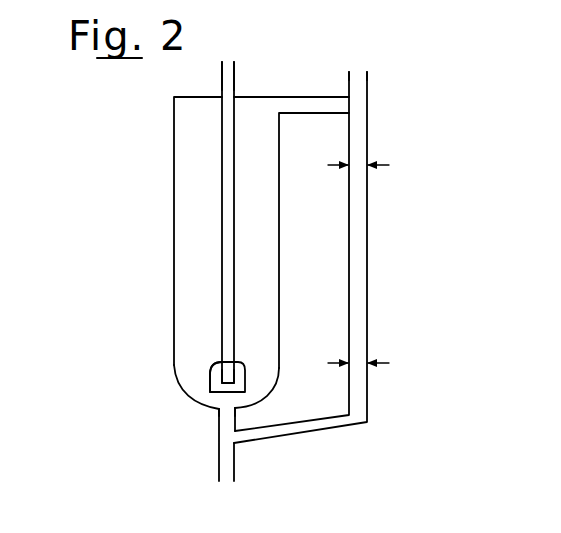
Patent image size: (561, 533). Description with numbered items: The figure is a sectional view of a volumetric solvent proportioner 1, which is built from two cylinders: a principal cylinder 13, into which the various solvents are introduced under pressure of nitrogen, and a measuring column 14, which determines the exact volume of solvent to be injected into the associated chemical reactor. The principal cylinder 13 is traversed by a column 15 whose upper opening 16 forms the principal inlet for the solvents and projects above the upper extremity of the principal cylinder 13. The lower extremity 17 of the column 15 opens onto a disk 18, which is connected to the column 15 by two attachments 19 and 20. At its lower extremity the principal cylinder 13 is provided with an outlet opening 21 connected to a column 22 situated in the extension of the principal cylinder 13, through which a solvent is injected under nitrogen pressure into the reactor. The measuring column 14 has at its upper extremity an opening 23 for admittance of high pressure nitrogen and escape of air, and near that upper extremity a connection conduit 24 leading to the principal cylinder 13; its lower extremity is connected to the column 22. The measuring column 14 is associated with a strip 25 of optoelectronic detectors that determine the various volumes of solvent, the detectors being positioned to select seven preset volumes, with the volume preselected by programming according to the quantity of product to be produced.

The volumetric solvent proportioner 1 is at (150, 187).
The principal cylinder 13 is at (190, 145).
The measuring column 14 is at (375, 128).
The column 15 is at (228, 238).
The upper opening 16 is at (229, 60).
The lower extremity 17 is at (228, 373).
The disk 18 is at (238, 393).
The attachment 19 is at (222, 366).
The attachment 20 is at (210, 371).
The outlet opening 21 is at (228, 412).
The column 22 is at (227, 460).
The opening 23 is at (356, 76).
The connection conduit 24 is at (303, 110).
The strip of optoelectronic detectors 25 is at (380, 168).